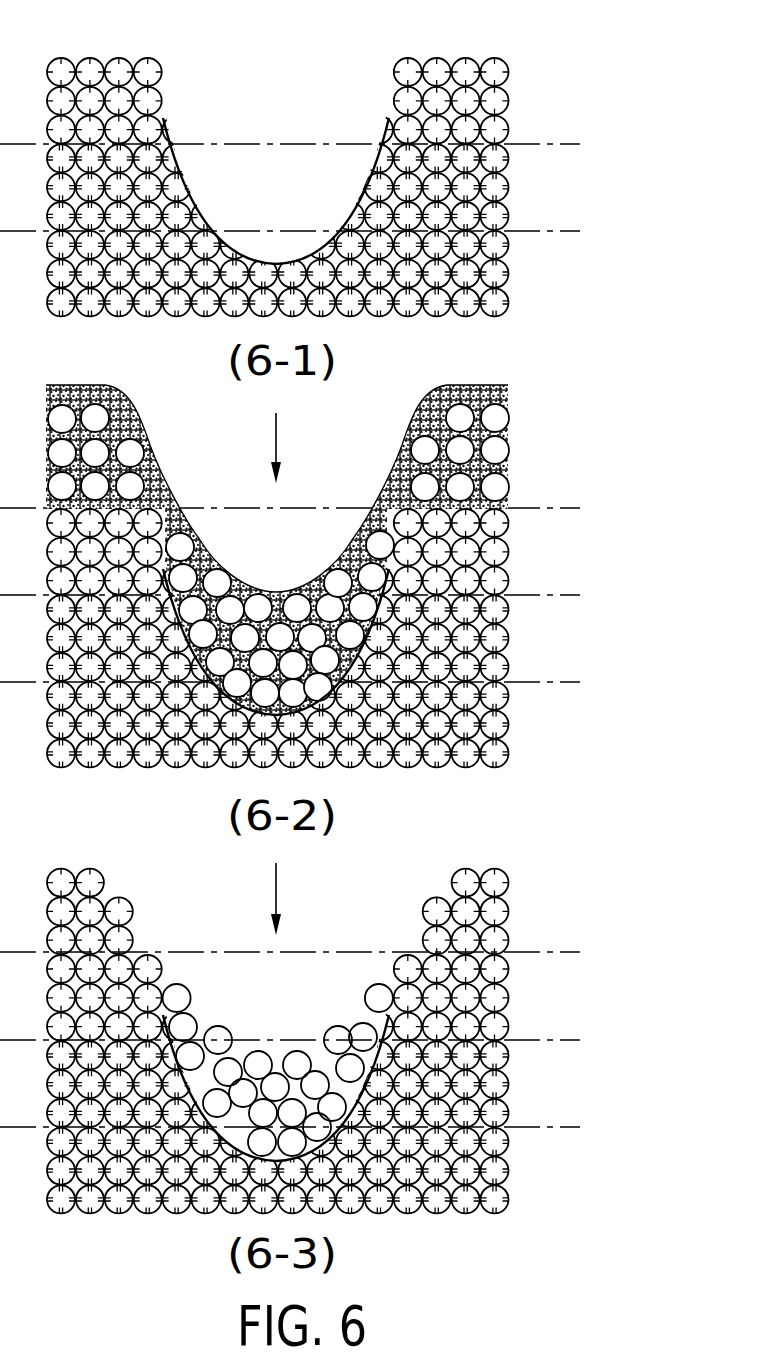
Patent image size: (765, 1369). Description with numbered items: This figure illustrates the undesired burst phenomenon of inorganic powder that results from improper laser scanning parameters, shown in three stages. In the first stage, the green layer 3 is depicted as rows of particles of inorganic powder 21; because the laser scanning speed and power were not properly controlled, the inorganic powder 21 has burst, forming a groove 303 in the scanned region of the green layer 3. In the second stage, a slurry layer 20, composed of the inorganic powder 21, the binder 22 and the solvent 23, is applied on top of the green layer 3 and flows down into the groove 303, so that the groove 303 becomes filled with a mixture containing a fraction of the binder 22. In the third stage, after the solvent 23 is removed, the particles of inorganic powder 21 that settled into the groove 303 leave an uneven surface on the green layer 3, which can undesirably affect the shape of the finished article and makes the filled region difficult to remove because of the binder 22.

The green layer 3 is at (332, 635).
The groove 303 is at (325, 125).
The slurry layer 20 is at (345, 532).
The inorganic powder 21 is at (492, 419).
The binder 22 is at (502, 438).
The solvent 23 is at (480, 384).